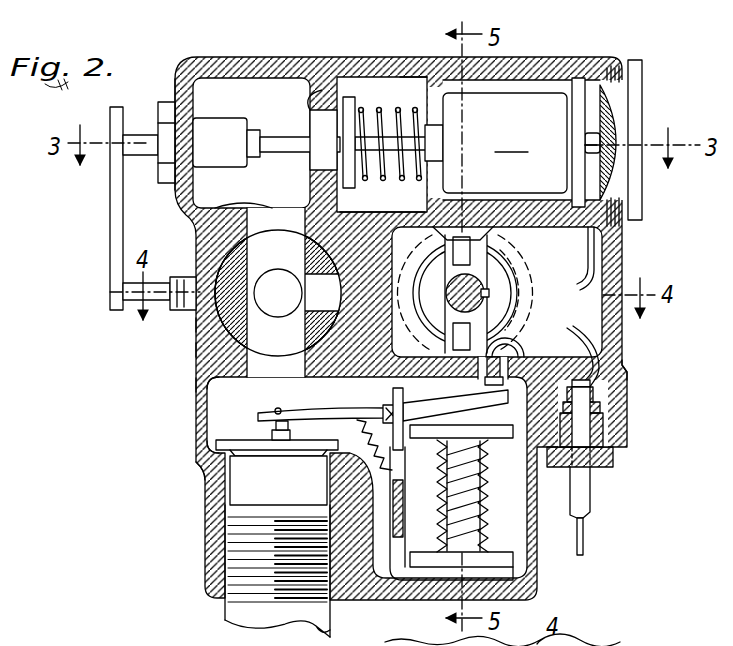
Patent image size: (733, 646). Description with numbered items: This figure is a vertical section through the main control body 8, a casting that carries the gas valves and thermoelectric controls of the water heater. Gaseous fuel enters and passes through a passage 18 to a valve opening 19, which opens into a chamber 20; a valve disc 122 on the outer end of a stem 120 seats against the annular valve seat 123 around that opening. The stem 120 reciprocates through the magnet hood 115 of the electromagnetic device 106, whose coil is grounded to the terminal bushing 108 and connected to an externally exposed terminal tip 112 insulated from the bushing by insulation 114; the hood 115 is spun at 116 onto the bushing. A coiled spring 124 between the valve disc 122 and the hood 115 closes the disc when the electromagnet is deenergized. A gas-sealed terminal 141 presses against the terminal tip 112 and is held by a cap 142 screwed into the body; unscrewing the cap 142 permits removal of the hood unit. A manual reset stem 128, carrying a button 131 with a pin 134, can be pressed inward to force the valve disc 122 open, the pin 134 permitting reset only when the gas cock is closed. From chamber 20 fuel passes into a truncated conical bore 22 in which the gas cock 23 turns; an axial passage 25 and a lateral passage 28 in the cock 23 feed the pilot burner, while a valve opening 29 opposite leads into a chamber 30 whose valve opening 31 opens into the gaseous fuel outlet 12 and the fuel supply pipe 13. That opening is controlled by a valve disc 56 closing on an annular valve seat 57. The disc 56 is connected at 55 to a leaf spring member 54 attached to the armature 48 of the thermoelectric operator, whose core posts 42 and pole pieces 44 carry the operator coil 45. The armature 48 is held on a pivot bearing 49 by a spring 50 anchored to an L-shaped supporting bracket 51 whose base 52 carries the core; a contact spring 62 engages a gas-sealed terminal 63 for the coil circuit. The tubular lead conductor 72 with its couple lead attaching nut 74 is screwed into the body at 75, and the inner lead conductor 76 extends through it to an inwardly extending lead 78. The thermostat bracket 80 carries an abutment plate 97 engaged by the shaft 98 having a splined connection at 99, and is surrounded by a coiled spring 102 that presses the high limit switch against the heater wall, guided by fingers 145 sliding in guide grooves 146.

The main control body 8 is at (182, 418).
The gaseous fuel outlet 12 is at (232, 550).
The fuel supply pipe 13 is at (237, 615).
The passage 18 is at (420, 82).
The valve opening 19 is at (312, 118).
The chamber 20 is at (213, 78).
The truncated conical bore 22 is at (233, 252).
The gas cock 23 is at (197, 325).
The axial passage 25 is at (196, 350).
The lateral passage 28 is at (362, 220).
The valve opening 29 is at (198, 385).
The chamber 30 is at (200, 400).
The valve opening 31 is at (205, 472).
The posts 42 is at (467, 497).
The pole pieces 44 is at (465, 430).
The operator coil 45 is at (468, 525).
The armature 48 is at (478, 400).
The pivot bearing 49 is at (395, 405).
The spring 50 is at (404, 447).
The L-shaped supporting bracket 51 is at (397, 518).
The horizontal arm or base 52 is at (425, 572).
The leaf spring member 54 is at (298, 415).
The connection 55 is at (262, 426).
The valve disc 56 is at (290, 456).
The annular valve seat 57 is at (205, 458).
The contact spring 62 is at (552, 360).
The gas-sealed terminal 63 is at (514, 344).
The tubular lead conductor 72 is at (582, 492).
The couple lead attaching nut 74 is at (600, 453).
The threaded connection 75 is at (612, 437).
The inner lead conductor 76 is at (585, 542).
The inwardly extending lead or terminal 78 is at (612, 368).
The bracket 80 is at (418, 268).
The abutment plate 97 is at (487, 272).
The shaft 98 is at (470, 330).
The splined connection 99 is at (480, 297).
The coiled spring 102 is at (500, 312).
The device 106 is at (520, 105).
The terminal bushing 108 is at (578, 80).
The terminal tip 112 is at (590, 157).
The insulation 114 is at (585, 138).
The magnet hood 115 is at (512, 142).
The spun engagement 116 is at (570, 172).
The stem 120 is at (417, 147).
The valve disc 122 is at (356, 100).
The annular valve seat 123 is at (352, 97).
The coiled spring 124 is at (391, 112).
The manual reset stem 128 is at (136, 140).
The resetting button 131 is at (112, 222).
The pin 134 is at (130, 288).
The gas-sealed terminal 141 is at (597, 250).
The cap 142 is at (624, 89).
The guide fingers 145 is at (468, 255).
The guide grooves 146 is at (470, 240).